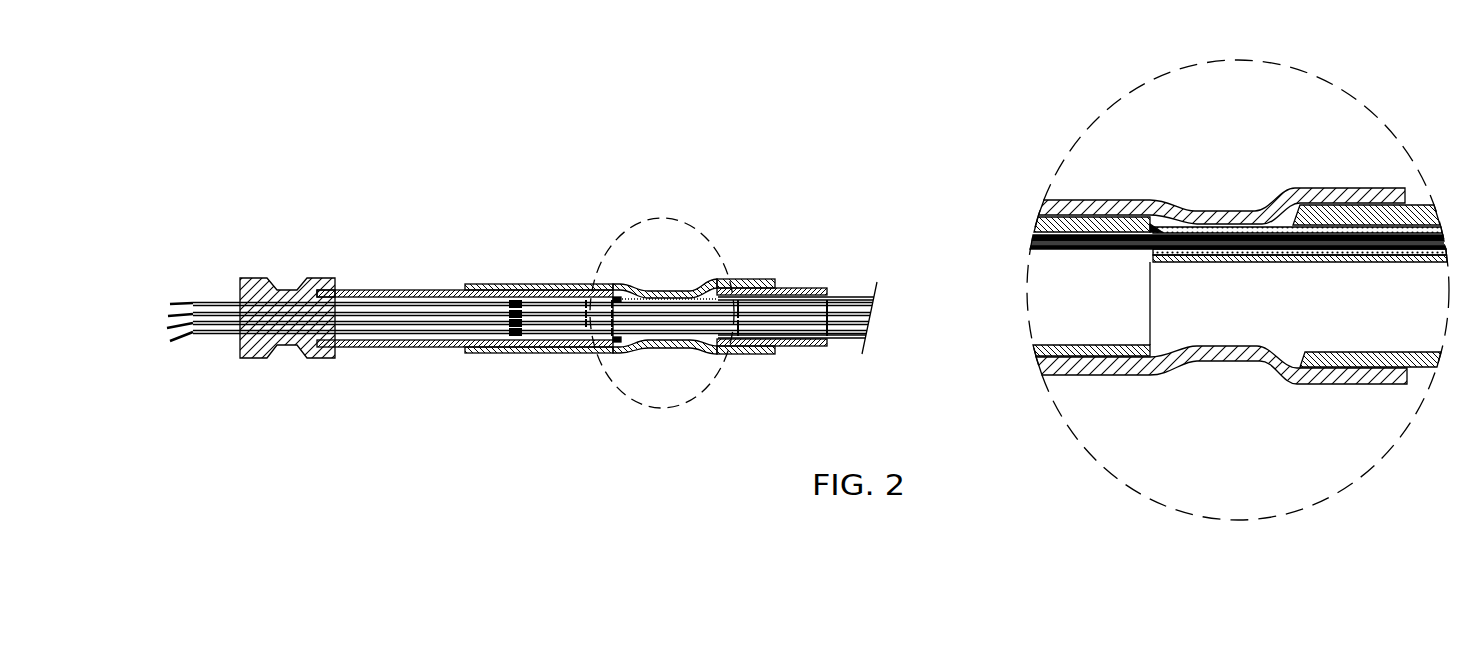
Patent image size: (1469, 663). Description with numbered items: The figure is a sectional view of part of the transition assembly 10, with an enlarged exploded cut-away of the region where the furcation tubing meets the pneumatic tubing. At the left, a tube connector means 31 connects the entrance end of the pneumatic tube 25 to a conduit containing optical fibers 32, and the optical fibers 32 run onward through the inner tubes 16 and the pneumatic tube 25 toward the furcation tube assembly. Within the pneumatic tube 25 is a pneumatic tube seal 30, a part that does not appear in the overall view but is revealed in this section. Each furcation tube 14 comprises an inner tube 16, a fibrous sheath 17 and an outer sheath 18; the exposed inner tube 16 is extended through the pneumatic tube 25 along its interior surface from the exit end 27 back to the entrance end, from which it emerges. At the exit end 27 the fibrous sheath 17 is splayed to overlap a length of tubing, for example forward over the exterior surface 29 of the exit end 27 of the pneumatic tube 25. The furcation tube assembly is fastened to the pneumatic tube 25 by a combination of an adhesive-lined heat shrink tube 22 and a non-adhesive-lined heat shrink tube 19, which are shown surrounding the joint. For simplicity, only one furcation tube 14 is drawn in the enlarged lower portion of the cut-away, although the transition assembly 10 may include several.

In FIG. 2, the transition assembly 10 is at (423, 248).
In FIG. 2, the furcation tube 14 is at (848, 300).
In FIG. 2a, the furcation tube 14 is at (1372, 262).
In FIG. 2, the inner tube 16 is at (228, 337).
In FIG. 2a, the inner tube 16 is at (1067, 247).
In FIG. 2, the fibrous sheath 17 is at (618, 342).
In FIG. 2a, the fibrous sheath 17 is at (1083, 247).
In FIG. 2, the outer sheath 18 is at (632, 300).
In FIG. 2a, the outer sheath 18 is at (1300, 222).
In FIG. 2, the non-adhesive-lined heat shrink tube 19 is at (800, 288).
In FIG. 2a, the non-adhesive-lined heat shrink tube 19 is at (1425, 210).
In FIG. 2, the adhesive-lined heat shrink tube 22 is at (577, 285).
In FIG. 2a, the adhesive-lined heat shrink tube 22 is at (1060, 203).
In FIG. 2, the pneumatic tube 25 is at (438, 343).
In FIG. 2a, the exit end 27 is at (1150, 228).
In FIG. 2, the exterior surface 29 is at (320, 292).
In FIG. 2, the pneumatic tube seal 30 is at (513, 290).
In FIG. 2, the tube connector means 31 is at (270, 357).
In FIG. 2, the optical fiber 32 is at (183, 302).
In FIG. 2a, the optical fiber 32 is at (1033, 250).